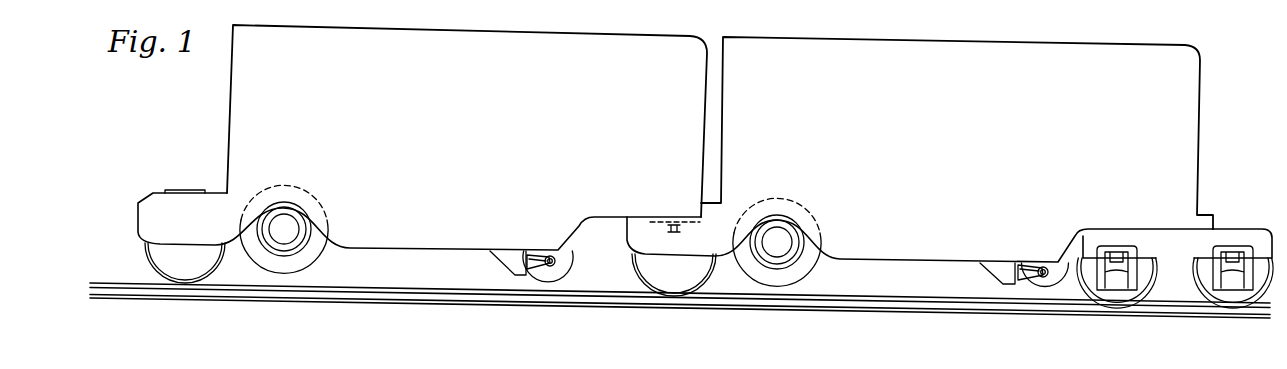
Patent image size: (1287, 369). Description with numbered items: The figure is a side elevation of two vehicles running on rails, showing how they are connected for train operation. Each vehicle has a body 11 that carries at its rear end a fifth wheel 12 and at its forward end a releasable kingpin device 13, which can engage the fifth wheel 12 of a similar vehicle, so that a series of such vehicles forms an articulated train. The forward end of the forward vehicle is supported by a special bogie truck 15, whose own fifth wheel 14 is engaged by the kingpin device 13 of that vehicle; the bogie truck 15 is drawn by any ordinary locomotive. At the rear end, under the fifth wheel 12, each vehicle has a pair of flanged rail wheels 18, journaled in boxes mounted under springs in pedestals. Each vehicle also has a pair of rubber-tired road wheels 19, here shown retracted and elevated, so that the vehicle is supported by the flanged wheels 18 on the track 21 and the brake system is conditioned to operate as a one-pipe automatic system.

The body of the vehicle 11 is at (720, 127).
The fifth wheel 12 is at (184, 189).
The releasable kingpin device 13 is at (665, 224).
The fifth wheel of bogie truck 14 is at (1167, 232).
The bogie truck 15 is at (1240, 233).
The flanged rail wheels 18 is at (157, 247).
The rubber-tired road wheels 19 is at (312, 253).
The track 21 is at (372, 288).